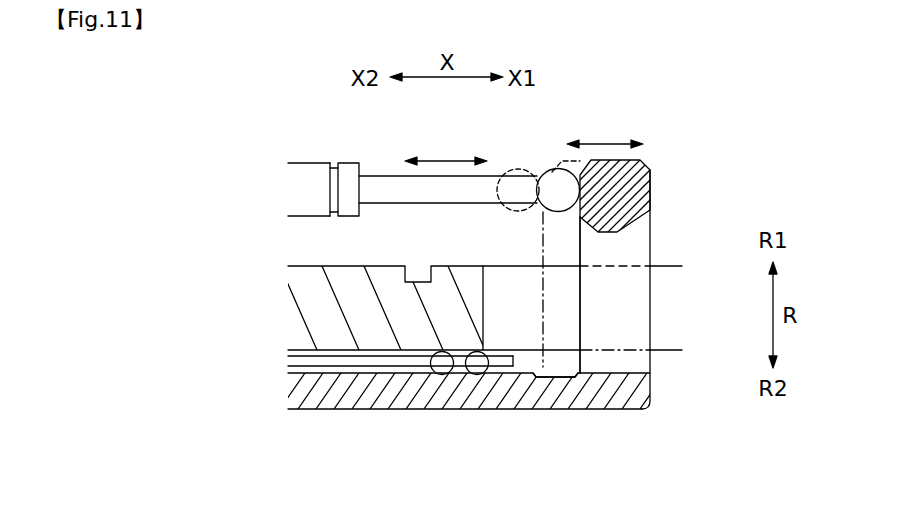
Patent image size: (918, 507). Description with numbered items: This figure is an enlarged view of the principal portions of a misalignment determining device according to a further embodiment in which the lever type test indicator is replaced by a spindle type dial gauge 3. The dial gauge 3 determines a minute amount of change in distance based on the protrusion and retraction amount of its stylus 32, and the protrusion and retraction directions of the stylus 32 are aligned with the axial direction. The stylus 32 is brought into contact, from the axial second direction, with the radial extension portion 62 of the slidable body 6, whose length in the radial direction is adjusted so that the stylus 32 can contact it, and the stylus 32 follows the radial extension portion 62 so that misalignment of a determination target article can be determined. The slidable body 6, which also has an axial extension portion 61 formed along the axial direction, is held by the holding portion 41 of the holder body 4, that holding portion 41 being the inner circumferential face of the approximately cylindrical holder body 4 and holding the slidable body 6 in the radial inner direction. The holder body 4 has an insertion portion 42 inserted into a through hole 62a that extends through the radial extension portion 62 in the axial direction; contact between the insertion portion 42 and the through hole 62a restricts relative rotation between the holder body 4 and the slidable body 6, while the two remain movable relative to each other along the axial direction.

The spindle type dial gauge 3 is at (311, 163).
The stylus 32 is at (473, 192).
The holder body 4 is at (450, 288).
The holding portion 41 is at (308, 322).
The insertion portion 42 is at (560, 337).
The slidable body 6 is at (529, 332).
The axial extension portion 61 is at (372, 393).
The radial extension portion 62 is at (638, 183).
The through hole 62a is at (654, 236).